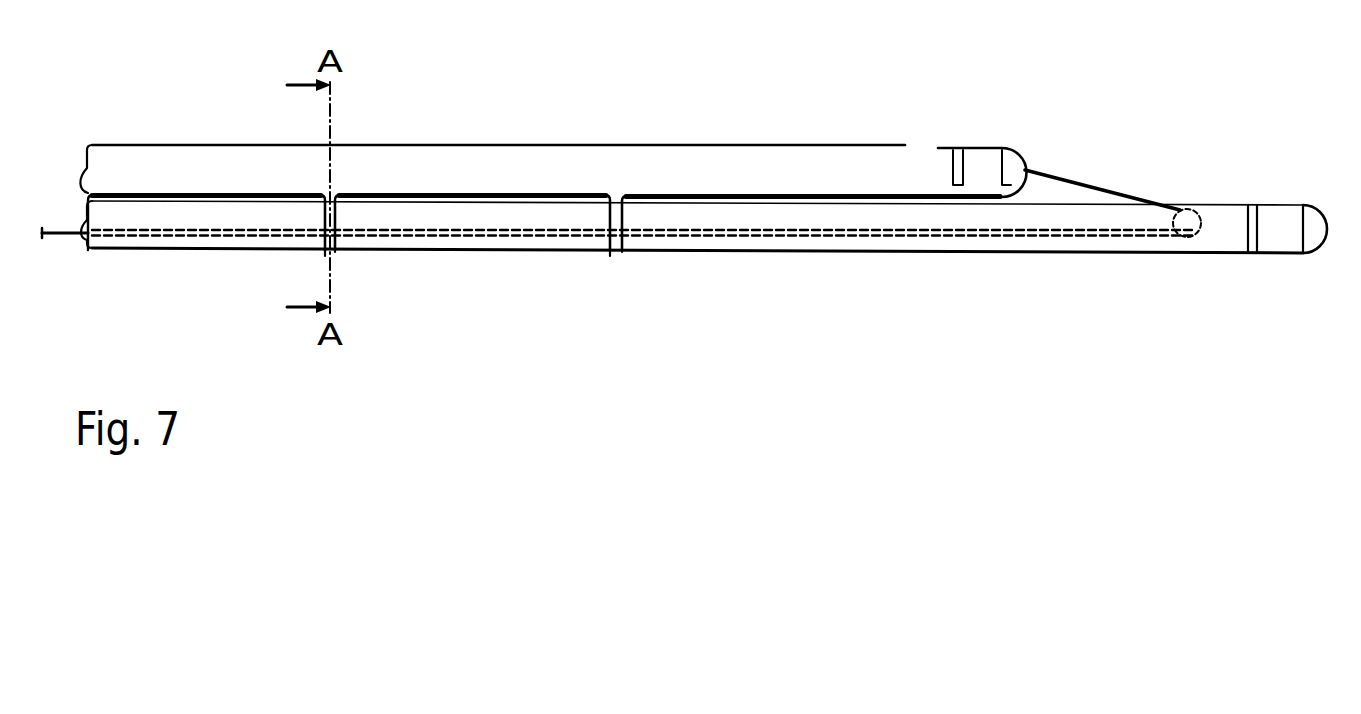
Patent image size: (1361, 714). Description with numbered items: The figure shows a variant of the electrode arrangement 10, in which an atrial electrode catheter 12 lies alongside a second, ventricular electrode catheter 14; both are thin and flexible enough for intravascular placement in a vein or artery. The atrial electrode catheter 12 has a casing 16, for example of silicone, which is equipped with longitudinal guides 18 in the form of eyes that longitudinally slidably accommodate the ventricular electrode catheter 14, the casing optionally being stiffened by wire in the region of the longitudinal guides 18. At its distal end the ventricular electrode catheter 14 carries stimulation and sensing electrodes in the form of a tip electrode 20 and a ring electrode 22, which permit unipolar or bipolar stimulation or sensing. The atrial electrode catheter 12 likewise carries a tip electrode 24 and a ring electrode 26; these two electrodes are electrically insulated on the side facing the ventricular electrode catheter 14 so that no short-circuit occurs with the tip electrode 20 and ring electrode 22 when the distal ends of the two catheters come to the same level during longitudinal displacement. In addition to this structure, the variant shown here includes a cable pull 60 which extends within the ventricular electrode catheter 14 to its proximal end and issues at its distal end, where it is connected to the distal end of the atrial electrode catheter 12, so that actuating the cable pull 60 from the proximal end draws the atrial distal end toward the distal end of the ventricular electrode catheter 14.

The electrode arrangement 10 is at (661, 128).
The atrial electrode catheter 12 is at (854, 136).
The ventricular electrode catheter 14 is at (807, 243).
The casing 16 is at (519, 167).
The longitudinal guides 18 is at (613, 254).
The tip electrode 20 is at (1317, 256).
The ring electrode 22 is at (1253, 254).
The tip electrode 24 is at (1010, 163).
The ring electrode 26 is at (960, 162).
The cable pull 60 is at (1078, 178).